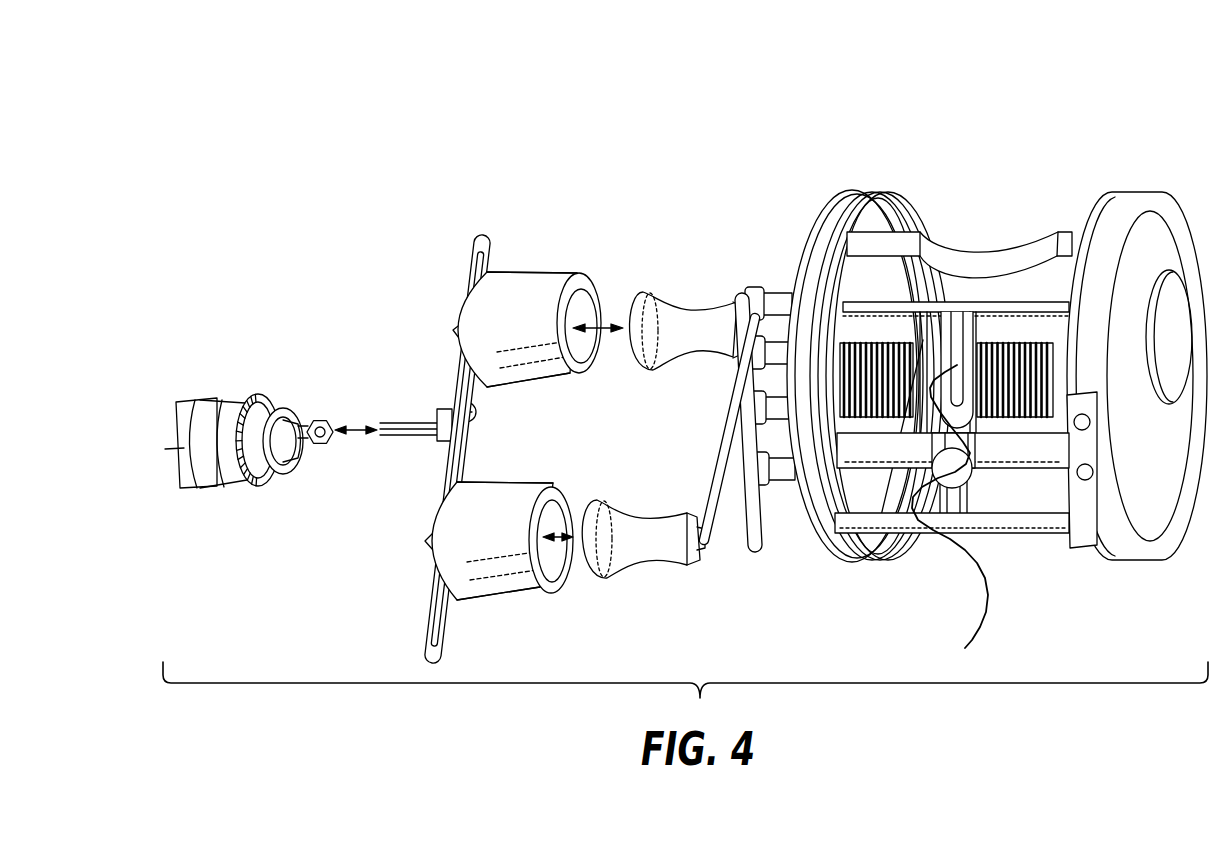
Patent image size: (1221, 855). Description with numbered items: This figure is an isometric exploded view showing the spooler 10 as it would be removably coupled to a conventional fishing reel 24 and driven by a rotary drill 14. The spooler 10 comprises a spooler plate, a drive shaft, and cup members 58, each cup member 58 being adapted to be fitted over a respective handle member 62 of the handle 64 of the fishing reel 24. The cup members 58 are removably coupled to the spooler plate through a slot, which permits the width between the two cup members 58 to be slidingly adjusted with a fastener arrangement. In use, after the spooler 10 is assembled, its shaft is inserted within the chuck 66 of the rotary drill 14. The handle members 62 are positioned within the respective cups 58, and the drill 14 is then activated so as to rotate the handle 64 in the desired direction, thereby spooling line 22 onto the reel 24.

The spooler 10 is at (398, 296).
The rotary drill 14 is at (198, 354).
The fishing line 22 is at (987, 577).
The fishing reel 24 is at (1024, 167).
The cup member 58 is at (474, 500).
The handle member 62 is at (667, 325).
The handle 64 is at (658, 431).
The chuck 66 is at (323, 438).